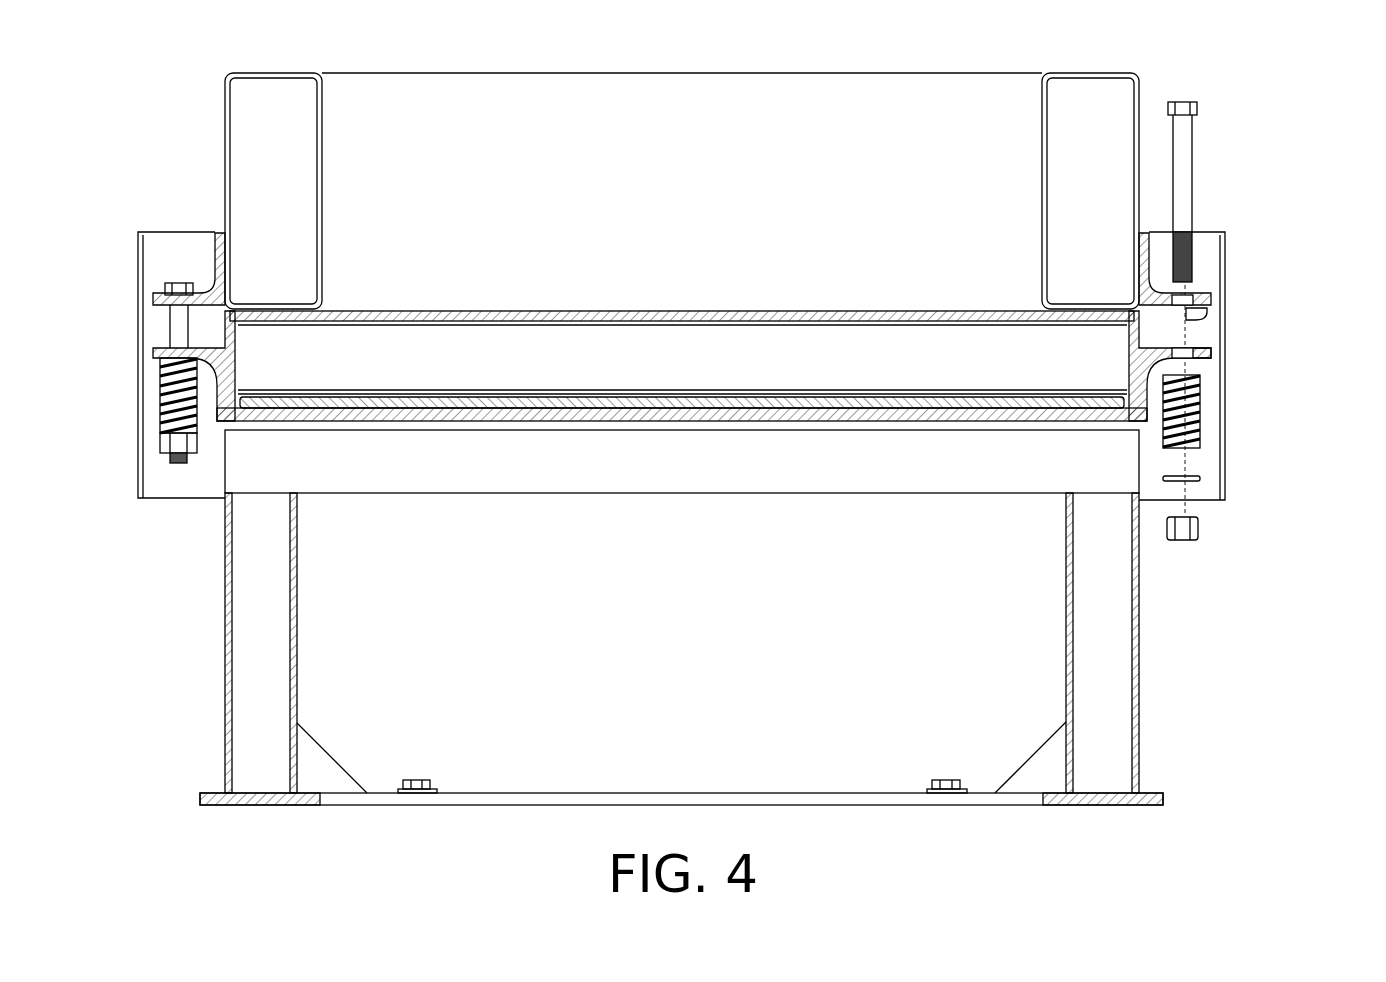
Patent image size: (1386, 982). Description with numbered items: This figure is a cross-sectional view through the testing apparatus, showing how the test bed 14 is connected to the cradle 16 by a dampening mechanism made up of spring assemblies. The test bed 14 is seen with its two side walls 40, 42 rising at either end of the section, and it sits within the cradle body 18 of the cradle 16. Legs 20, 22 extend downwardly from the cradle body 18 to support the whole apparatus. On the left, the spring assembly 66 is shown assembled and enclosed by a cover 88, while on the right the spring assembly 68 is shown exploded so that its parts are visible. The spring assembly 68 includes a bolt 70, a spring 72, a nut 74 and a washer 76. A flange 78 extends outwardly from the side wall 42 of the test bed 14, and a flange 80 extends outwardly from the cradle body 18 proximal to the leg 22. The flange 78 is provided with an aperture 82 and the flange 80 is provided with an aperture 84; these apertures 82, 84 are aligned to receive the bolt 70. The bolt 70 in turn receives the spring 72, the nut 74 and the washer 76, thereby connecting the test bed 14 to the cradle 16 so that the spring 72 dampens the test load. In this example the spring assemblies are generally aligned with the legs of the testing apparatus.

The test bed 14 is at (218, 110).
The cradle 16 is at (675, 649).
The cradle body 18 is at (225, 465).
The leg 20 is at (242, 683).
The leg 22 is at (1118, 673).
The side wall 40 is at (225, 147).
The side wall 42 is at (1140, 90).
The spring assembly 66 is at (160, 407).
The spring assembly 68 is at (1251, 313).
The bolt 70 is at (1185, 152).
The spring 72 is at (1200, 412).
The nut 74 is at (1213, 534).
The washer 76 is at (1200, 478).
The flange 78 is at (1205, 297).
The flange 80 is at (1208, 352).
The aperture 82 is at (1195, 318).
The aperture 84 is at (1187, 352).
The cover 88 is at (140, 292).